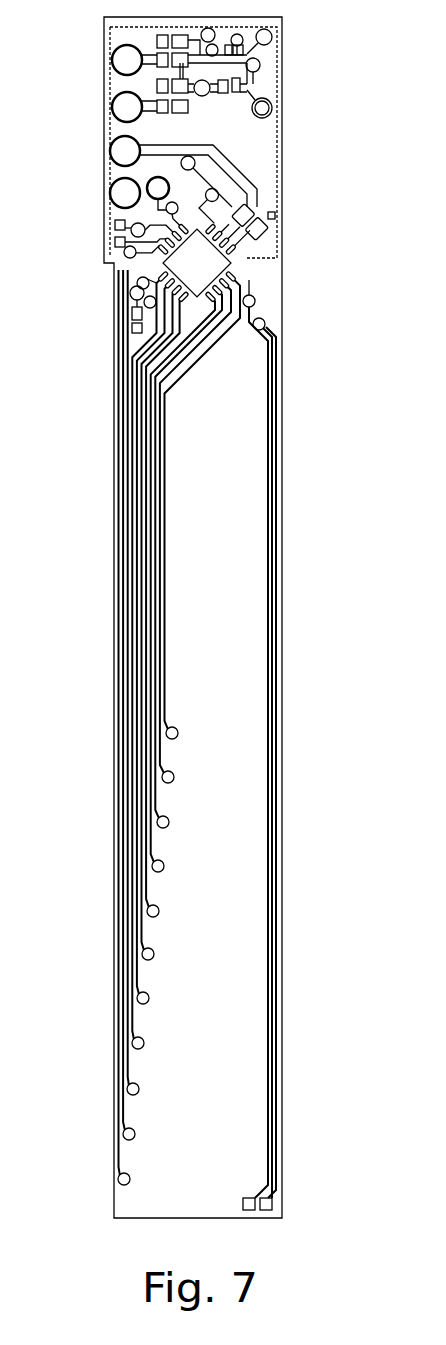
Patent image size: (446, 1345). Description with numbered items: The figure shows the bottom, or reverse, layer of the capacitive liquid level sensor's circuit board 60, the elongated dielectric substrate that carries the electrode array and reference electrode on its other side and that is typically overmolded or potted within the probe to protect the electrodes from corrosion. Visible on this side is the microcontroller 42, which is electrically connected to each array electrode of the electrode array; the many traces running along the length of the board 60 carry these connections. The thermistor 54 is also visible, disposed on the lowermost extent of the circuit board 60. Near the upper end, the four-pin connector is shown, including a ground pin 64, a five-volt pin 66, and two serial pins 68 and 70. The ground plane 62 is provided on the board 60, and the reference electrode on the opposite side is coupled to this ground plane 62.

The serial pin 70 is at (116, 61).
The serial pin 68 is at (116, 108).
The 5V pin 66 is at (115, 152).
The ground pin 64 is at (115, 193).
The ground plane 62 is at (262, 151).
The microcontroller 42 is at (208, 262).
The circuit board 60 is at (222, 479).
The thermistor 54 is at (243, 1204).